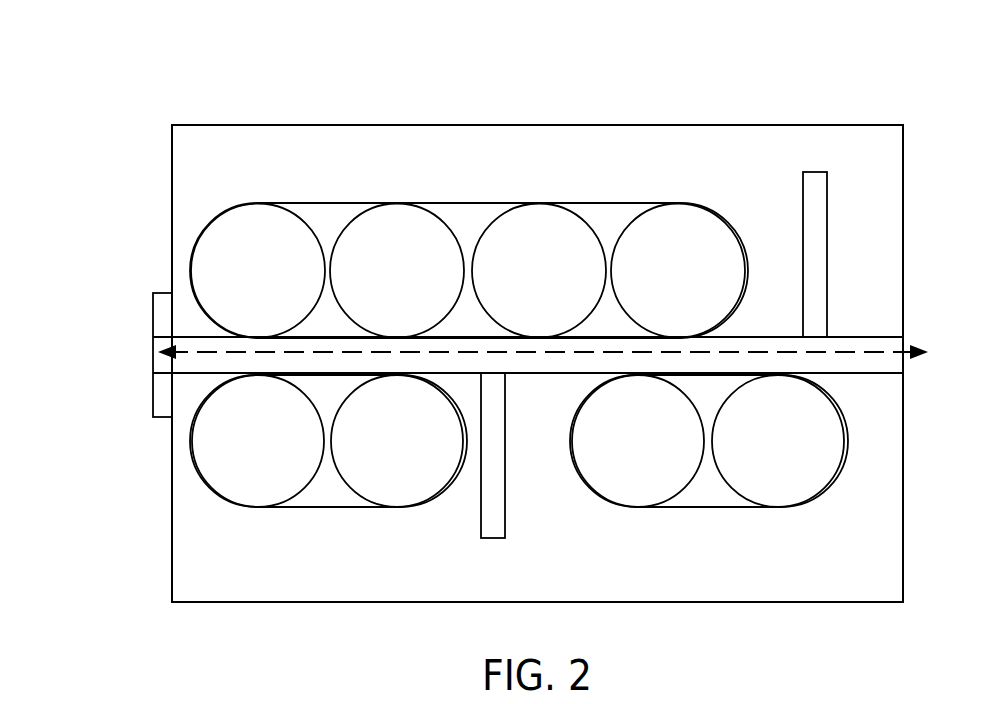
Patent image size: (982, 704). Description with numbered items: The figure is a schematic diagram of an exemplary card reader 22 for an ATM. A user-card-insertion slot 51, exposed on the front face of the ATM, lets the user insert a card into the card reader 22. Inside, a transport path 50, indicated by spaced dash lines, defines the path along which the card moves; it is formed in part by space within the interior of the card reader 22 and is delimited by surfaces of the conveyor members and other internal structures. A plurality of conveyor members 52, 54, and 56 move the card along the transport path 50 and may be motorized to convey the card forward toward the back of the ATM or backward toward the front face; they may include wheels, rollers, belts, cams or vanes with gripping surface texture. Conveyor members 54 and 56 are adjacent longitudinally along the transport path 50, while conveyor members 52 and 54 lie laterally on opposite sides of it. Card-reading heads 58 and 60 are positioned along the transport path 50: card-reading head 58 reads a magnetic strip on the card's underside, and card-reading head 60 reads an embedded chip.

The card reader 22 is at (133, 83).
The transport path 50 is at (84, 351).
The user-card-insertion slot 51 is at (158, 322).
The conveyor member 52 is at (455, 156).
The conveyor member 54 is at (302, 544).
The conveyor member 56 is at (730, 544).
The card-reading head 58 is at (490, 530).
The card-reading head 60 is at (818, 184).